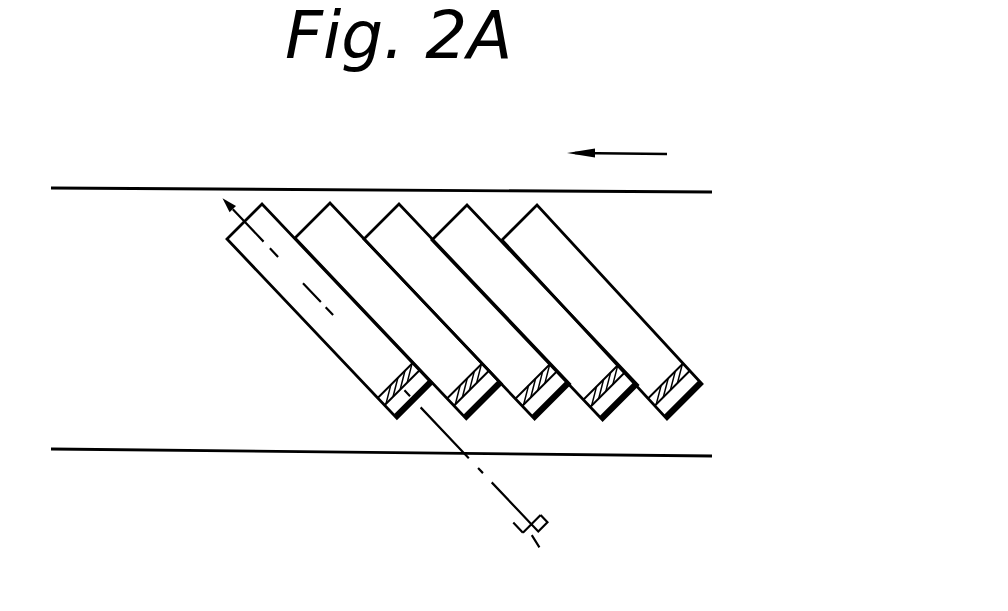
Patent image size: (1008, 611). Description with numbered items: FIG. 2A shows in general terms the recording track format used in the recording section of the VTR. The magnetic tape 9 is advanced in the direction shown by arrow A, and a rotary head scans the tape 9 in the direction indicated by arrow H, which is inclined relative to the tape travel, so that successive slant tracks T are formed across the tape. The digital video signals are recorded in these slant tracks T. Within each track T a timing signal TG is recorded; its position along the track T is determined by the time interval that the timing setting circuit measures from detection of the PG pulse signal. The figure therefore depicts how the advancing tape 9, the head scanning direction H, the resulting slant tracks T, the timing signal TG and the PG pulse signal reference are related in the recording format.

The magnetic tape 9 is at (700, 190).
The arrow A is at (622, 150).
The slant track T is at (336, 205).
The timing signal TG is at (383, 403).
The arrow H is at (300, 293).
The PG pulse signal PG is at (484, 485).